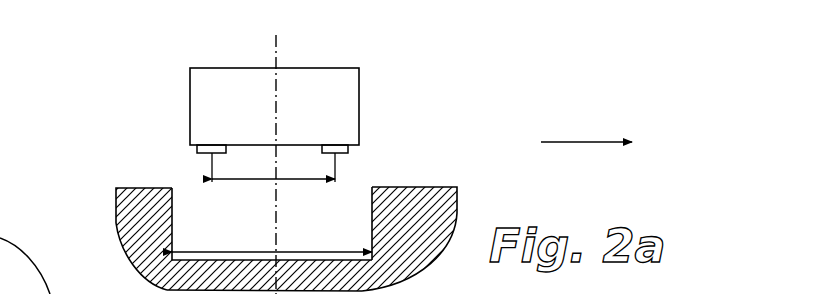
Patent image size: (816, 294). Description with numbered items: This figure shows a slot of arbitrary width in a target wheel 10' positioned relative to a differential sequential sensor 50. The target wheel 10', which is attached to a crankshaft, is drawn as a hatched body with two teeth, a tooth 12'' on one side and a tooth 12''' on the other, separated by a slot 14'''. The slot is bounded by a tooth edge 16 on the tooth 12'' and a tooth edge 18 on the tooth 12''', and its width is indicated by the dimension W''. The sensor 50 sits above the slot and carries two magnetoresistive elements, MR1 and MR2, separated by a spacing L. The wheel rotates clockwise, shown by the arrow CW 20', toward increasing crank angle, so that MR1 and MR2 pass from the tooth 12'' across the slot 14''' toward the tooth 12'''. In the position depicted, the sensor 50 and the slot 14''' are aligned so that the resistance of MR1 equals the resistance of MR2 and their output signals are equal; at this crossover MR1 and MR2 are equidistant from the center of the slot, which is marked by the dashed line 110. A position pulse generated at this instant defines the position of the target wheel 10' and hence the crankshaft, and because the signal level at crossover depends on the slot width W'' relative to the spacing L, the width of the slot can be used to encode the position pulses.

The target wheel 10' is at (251, 237).
The tooth 12''' is at (117, 209).
The tooth 12'' is at (440, 219).
The slot 14''' is at (272, 227).
The tooth edge 16 is at (371, 248).
The tooth edge 18 is at (172, 210).
The differential sequential sensor 50 is at (347, 78).
The dashed line 110 is at (278, 49).
The magnetoresistive element MR1 is at (208, 140).
The magnetoresistive element MR2 is at (349, 153).
The spacing L is at (309, 182).
The width W'' is at (272, 223).
The clockwise rotation 20' is at (604, 148).